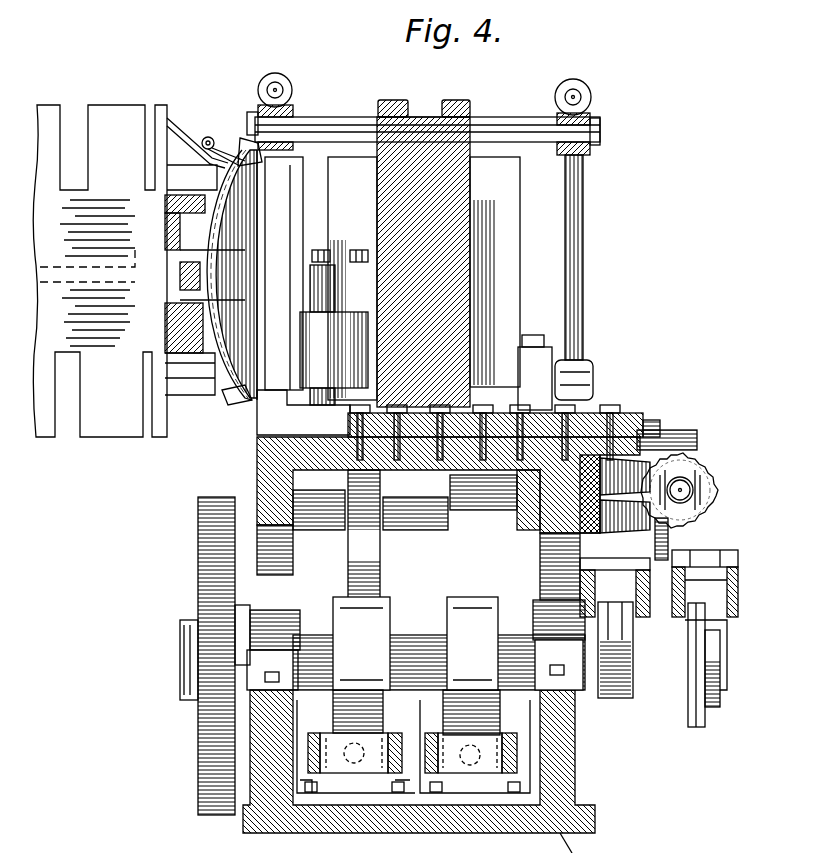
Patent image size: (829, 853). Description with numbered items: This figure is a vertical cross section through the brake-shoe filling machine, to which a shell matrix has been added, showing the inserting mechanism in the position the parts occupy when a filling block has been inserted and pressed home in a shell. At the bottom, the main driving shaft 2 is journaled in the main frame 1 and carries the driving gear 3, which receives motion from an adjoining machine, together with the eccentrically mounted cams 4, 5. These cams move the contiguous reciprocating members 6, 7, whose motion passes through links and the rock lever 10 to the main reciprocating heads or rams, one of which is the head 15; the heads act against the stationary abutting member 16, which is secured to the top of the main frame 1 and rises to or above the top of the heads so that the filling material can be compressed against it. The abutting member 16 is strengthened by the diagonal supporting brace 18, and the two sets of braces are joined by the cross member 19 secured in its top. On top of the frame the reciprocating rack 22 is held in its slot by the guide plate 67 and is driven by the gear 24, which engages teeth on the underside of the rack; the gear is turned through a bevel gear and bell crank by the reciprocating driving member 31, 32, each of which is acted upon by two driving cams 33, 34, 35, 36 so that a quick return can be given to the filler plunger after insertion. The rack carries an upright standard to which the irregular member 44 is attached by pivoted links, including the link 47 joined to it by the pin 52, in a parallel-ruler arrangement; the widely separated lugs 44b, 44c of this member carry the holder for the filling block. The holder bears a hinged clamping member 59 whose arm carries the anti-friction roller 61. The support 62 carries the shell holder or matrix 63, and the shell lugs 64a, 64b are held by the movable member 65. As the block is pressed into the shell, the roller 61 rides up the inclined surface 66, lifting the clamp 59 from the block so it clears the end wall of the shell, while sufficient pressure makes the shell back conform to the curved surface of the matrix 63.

The main frame 1 is at (265, 462).
The main driving shaft 2 is at (439, 662).
The driving gear 3 is at (198, 562).
The eccentrically mounted cam 4 is at (361, 643).
The eccentrically mounted cam 5 is at (472, 643).
The reciprocating member 6 is at (312, 735).
The reciprocating member 7 is at (430, 745).
The rock lever 10 is at (383, 558).
The main reciprocating head or ram 15 is at (520, 192).
The stationary abutting member 16 is at (415, 155).
The diagonal supporting brace 18 is at (578, 300).
The cross member 19 is at (518, 125).
The reciprocating rack 22 is at (680, 432).
The gear 24 is at (704, 498).
The reciprocating driving member 31 is at (740, 588).
The reciprocating driving member 32 is at (595, 572).
The driving cam 33 is at (720, 695).
The driving cam 34 is at (697, 660).
The driving cam 35 is at (625, 690).
The driving cam 36 is at (610, 648).
The irregular member 44 is at (295, 214).
The lug or branch 44b is at (285, 160).
The lug or branch 44c is at (293, 413).
The pivoted link 47 is at (304, 356).
The pin 52 is at (322, 250).
The hinged clamping member 59 is at (240, 138).
The anti-friction roller 61 is at (210, 137).
The support 62 is at (118, 115).
The shell holder or matrix 63 is at (232, 322).
The shell lug 64a is at (183, 265).
The shell lug 64b is at (185, 292).
The holding member 65 is at (182, 270).
The inclined surface 66 is at (183, 125).
The guide plate 67 is at (590, 414).